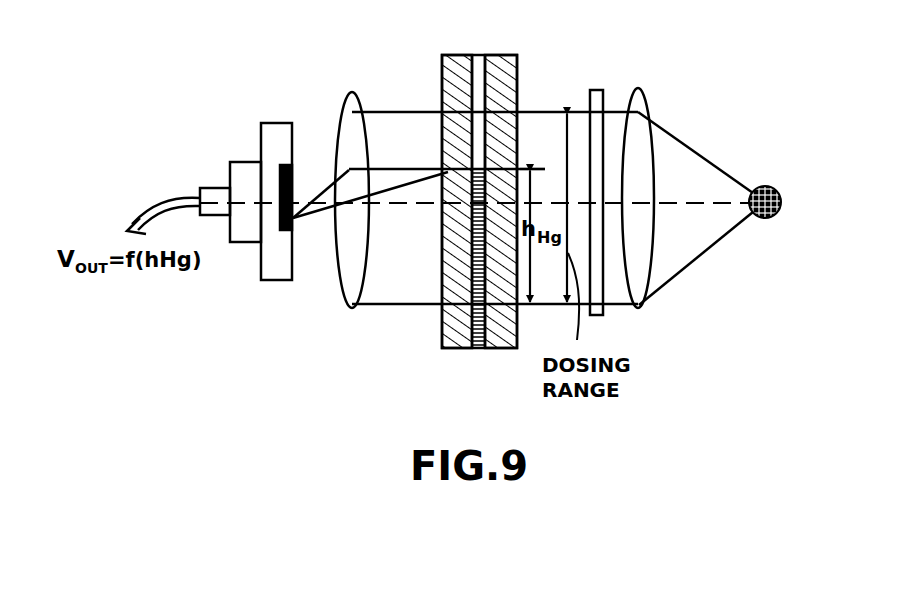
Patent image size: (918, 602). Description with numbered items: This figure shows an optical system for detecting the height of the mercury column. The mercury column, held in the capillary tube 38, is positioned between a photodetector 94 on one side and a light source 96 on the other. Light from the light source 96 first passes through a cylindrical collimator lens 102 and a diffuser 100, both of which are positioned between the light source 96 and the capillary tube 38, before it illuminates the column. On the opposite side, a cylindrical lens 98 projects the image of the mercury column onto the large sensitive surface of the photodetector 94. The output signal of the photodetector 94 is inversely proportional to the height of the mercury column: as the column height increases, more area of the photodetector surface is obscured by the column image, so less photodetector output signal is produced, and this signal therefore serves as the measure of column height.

The photodetector 94 is at (243, 162).
The cylindrical lens 98 is at (345, 112).
The capillary tube 38 is at (517, 87).
The diffuser 100 is at (598, 90).
The cylindrical collimator lens 102 is at (643, 102).
The light source 96 is at (807, 178).